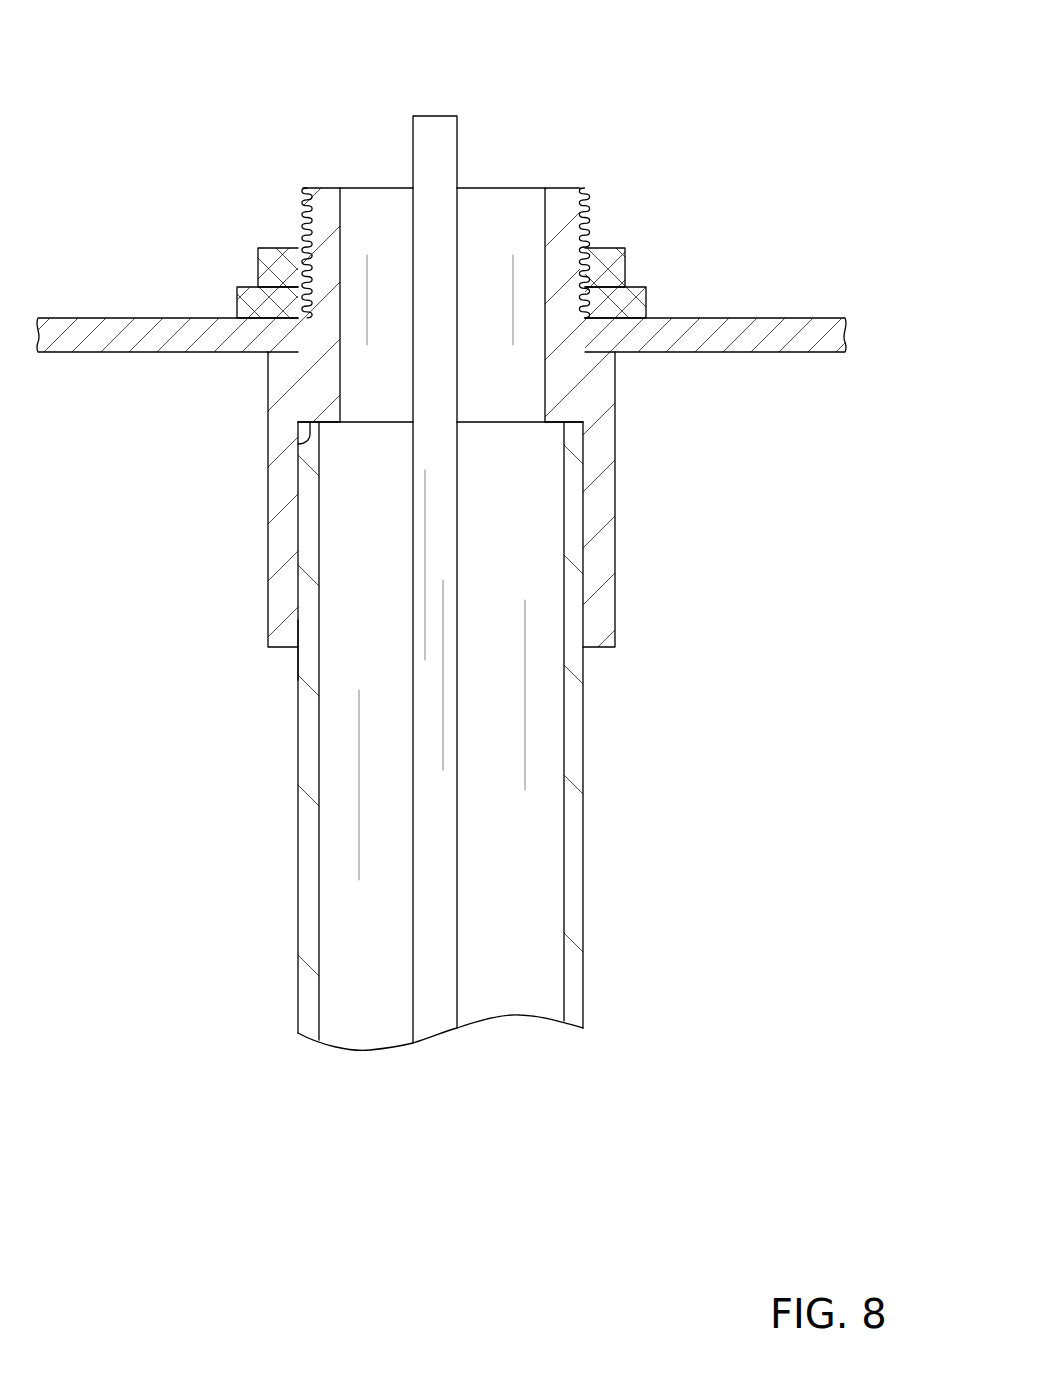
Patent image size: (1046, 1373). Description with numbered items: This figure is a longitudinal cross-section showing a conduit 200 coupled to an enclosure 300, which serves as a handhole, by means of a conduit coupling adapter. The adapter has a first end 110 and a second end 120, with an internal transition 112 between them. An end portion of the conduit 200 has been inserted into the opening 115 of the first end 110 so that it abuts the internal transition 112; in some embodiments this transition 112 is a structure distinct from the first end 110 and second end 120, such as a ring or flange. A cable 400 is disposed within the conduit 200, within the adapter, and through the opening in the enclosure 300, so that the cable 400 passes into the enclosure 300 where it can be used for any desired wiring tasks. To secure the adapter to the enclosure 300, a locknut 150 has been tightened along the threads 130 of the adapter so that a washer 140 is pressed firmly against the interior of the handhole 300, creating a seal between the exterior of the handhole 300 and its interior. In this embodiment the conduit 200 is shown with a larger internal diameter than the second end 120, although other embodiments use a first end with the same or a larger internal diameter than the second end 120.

The first end 110 is at (615, 525).
The internal transition 112 is at (298, 444).
The opening 115 is at (300, 630).
The second end 120 is at (500, 188).
The threads 130 is at (585, 218).
The washer 140 is at (646, 305).
The locknut 150 is at (625, 268).
The conduit 200 is at (585, 906).
The enclosure 300 is at (118, 352).
The cable 400 is at (413, 145).